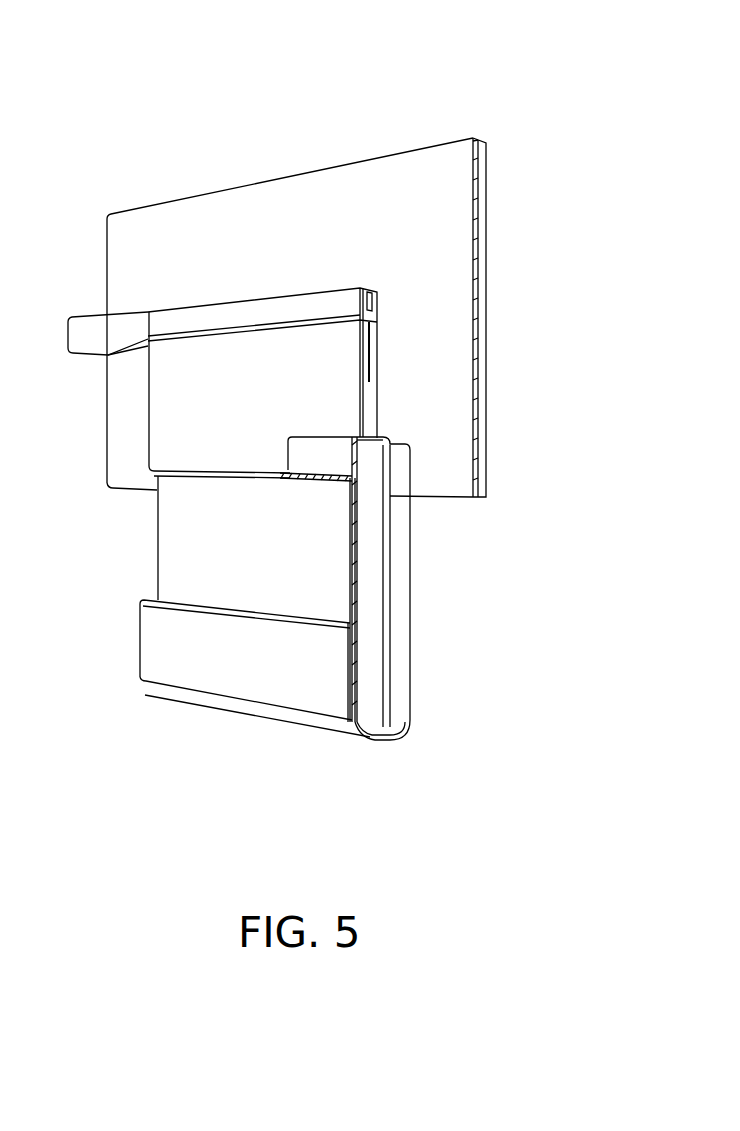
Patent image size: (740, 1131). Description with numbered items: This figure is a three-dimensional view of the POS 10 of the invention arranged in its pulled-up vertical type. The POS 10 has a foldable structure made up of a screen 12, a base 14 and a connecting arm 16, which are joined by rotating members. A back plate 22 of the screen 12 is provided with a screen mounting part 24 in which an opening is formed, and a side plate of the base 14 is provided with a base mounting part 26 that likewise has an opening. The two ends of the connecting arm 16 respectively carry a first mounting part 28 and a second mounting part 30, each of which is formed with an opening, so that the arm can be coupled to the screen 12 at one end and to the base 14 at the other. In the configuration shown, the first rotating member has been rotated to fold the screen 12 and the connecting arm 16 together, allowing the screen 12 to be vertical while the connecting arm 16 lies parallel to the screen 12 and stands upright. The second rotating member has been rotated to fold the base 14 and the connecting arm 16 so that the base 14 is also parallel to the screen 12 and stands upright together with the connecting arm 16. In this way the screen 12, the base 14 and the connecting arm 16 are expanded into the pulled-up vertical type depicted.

The POS 10 is at (225, 117).
The screen 12 is at (480, 188).
The base 14 is at (180, 523).
The connecting arm 16 is at (397, 632).
The back plate 22 is at (152, 228).
The screen mounting part 24 is at (330, 463).
The base mounting part 26 is at (218, 700).
The first mounting part 28 is at (380, 443).
The second mounting part 30 is at (375, 730).